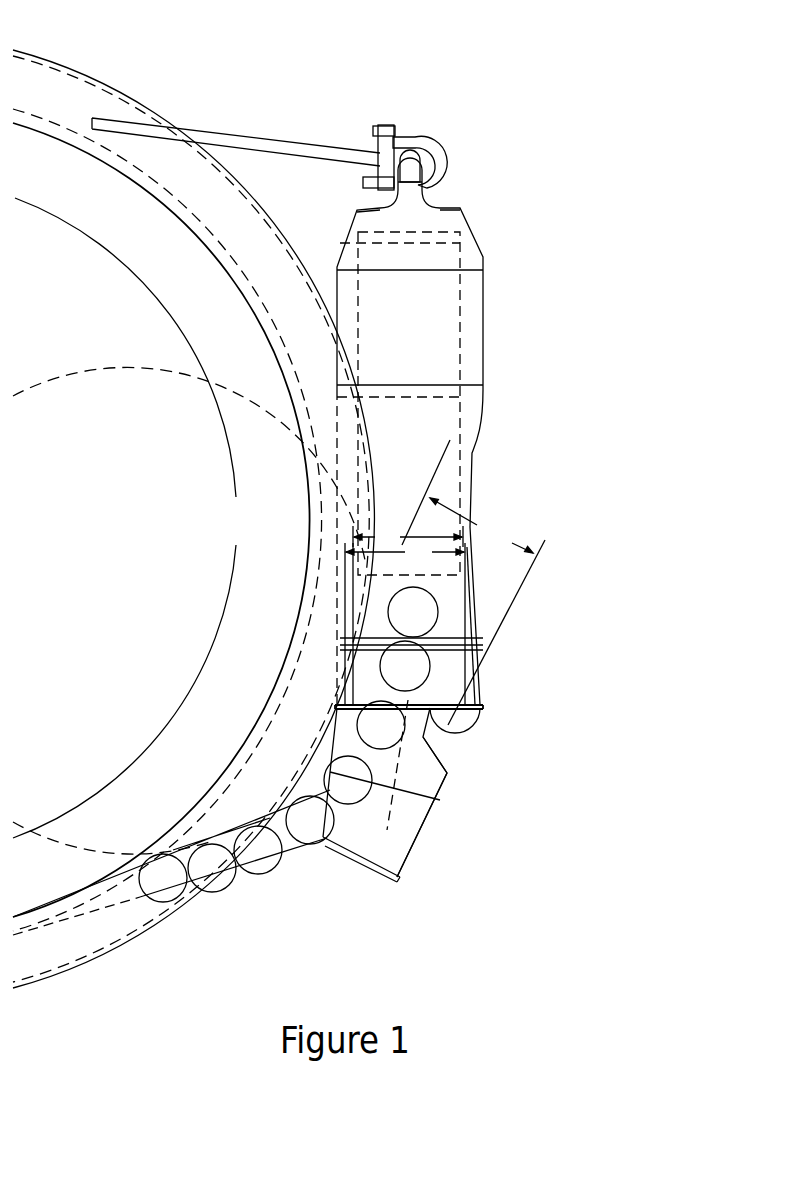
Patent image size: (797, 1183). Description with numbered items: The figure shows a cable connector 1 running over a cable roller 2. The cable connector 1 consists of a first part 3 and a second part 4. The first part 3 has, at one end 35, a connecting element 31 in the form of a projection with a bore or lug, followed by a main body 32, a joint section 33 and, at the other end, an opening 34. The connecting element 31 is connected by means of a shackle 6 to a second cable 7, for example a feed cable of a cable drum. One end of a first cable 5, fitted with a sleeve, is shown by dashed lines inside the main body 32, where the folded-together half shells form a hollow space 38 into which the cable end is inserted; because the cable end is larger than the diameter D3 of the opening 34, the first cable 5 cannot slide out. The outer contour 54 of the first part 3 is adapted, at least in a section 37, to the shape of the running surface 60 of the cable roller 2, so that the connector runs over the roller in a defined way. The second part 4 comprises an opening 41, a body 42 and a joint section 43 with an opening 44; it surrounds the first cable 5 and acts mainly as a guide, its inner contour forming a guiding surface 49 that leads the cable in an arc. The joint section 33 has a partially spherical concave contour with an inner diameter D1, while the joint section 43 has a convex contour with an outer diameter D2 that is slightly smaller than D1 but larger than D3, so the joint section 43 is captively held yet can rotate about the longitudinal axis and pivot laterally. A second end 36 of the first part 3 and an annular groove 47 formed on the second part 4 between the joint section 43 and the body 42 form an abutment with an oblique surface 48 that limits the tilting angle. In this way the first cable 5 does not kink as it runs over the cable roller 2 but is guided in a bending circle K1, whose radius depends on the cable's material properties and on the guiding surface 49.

The cable connector 1 is at (346, 533).
The cable roller 2 is at (55, 157).
The first part 3 is at (508, 428).
The second part 4 is at (422, 800).
The first cable 5 is at (418, 617).
The shackle 6 is at (410, 138).
The second cable 7 is at (143, 127).
The connecting element 31 is at (413, 172).
The main body 32 is at (472, 312).
The joint section 33 is at (503, 704).
The opening 34 is at (385, 662).
The end 35 is at (460, 208).
The second end 36 is at (438, 708).
The section 37 is at (472, 483).
The hollow space 38 is at (422, 433).
The opening 41 is at (483, 638).
The body 42 is at (407, 822).
The joint section 43 is at (463, 683).
The opening 44 is at (327, 840).
The annular groove 47 is at (423, 737).
The oblique surface 48 is at (435, 758).
The guiding surface 49 is at (483, 705).
The outer contour 54 is at (472, 453).
The running surface 60 is at (262, 290).
The bending circle K1 is at (368, 673).
The inner diameter D1 is at (405, 551).
The outer diameter D2 is at (481, 525).
The diameter D3 is at (408, 536).